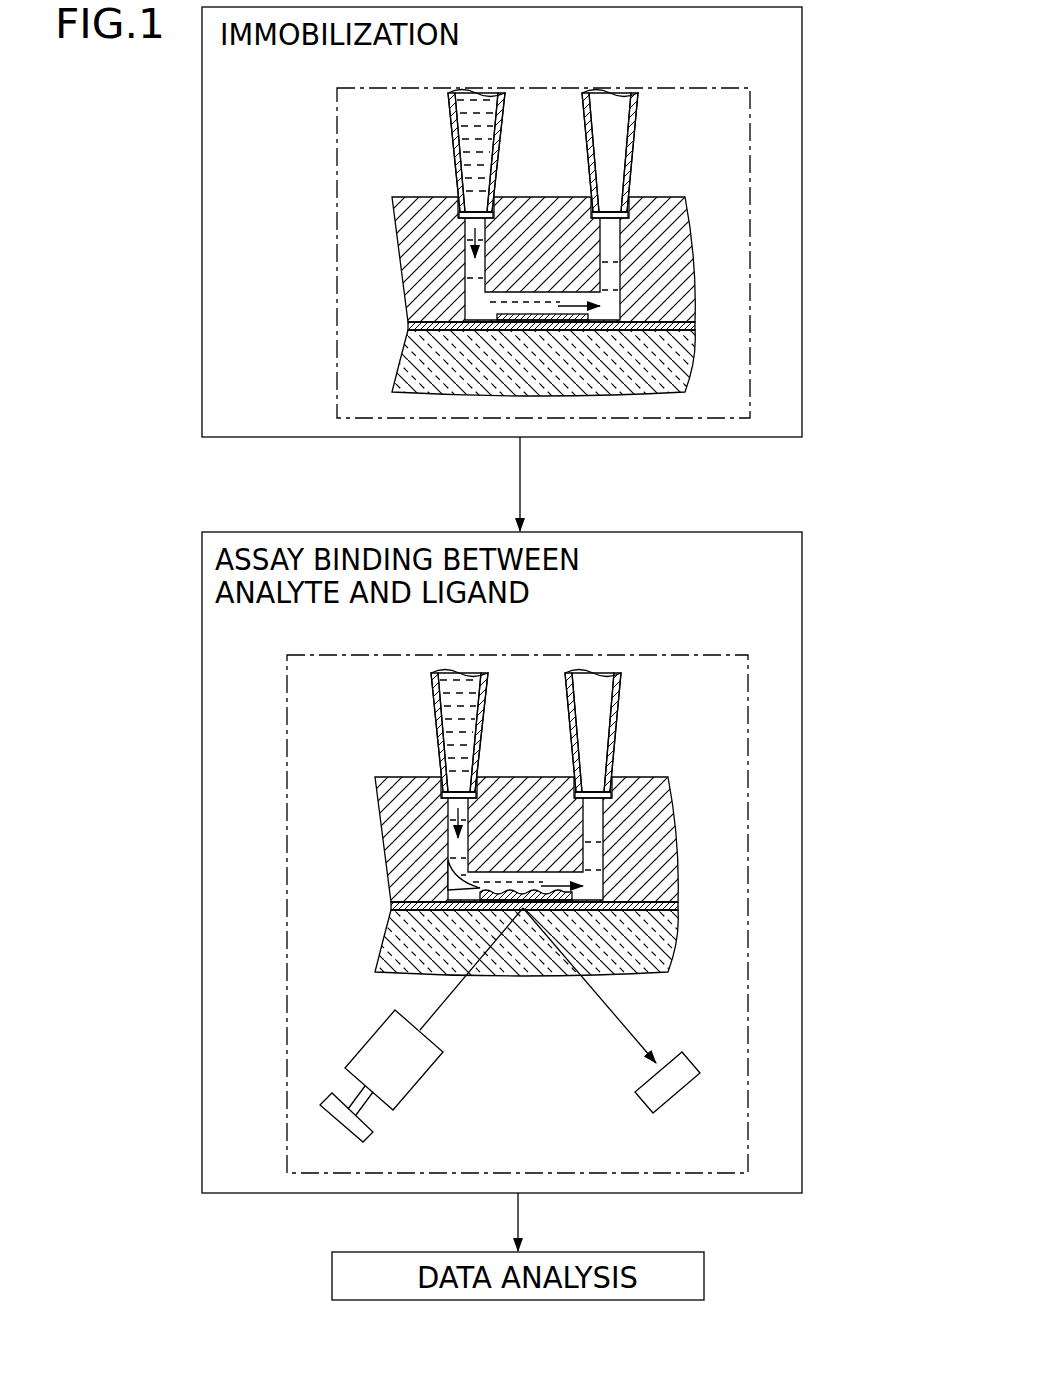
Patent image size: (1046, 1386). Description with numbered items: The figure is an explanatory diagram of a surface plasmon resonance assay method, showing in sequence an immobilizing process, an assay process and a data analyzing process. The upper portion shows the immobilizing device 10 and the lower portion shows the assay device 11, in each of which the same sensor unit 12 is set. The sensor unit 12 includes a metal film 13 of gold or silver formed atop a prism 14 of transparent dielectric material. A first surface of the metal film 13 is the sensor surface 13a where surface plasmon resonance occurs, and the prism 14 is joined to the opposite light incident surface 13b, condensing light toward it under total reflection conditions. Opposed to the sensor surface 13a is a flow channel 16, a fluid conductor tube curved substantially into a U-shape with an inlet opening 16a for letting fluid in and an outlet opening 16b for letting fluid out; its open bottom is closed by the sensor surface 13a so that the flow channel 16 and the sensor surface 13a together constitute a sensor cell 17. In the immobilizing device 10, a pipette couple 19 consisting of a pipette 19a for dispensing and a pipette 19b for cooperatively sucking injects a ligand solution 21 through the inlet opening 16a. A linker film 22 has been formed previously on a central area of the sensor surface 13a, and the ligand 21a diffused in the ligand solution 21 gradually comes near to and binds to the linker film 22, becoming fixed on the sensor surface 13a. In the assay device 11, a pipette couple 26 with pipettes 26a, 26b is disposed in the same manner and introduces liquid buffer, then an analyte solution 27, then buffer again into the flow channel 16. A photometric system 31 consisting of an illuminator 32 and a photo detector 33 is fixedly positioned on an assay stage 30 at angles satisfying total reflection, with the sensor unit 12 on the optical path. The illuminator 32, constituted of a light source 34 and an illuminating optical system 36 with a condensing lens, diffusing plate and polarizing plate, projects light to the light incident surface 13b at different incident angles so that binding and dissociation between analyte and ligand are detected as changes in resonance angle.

The immobilizing device 10 is at (337, 253).
The assay device 11 is at (287, 920).
The sensor unit 12 is at (571, 580).
The metal film 13 is at (571, 586).
The sensor surface 13a is at (470, 300).
The light incident surface 13b is at (510, 330).
The prism 14 is at (653, 372).
The flow channel 16 is at (622, 305).
The inlet opening 16a is at (460, 215).
The outlet opening 16b is at (628, 216).
The sensor cell 17 is at (622, 262).
The pipette couple 19 is at (467, 135).
The pipette 19a is at (503, 150).
The pipette 19b is at (588, 150).
The ligand solution 21 is at (470, 308).
The ligand 21a is at (466, 875).
The linker film 22 is at (546, 320).
The pipette couple 26 is at (466, 715).
The pipette 26a is at (483, 715).
The pipette 26b is at (583, 715).
The analyte solution 27 is at (612, 862).
The assay stage 30 is at (423, 1027).
The photometric system 31 is at (495, 1027).
The illuminator 32 is at (420, 1100).
The photo detector 33 is at (637, 1099).
The light source 34 is at (326, 1098).
The illuminating optical system 36 is at (366, 1040).